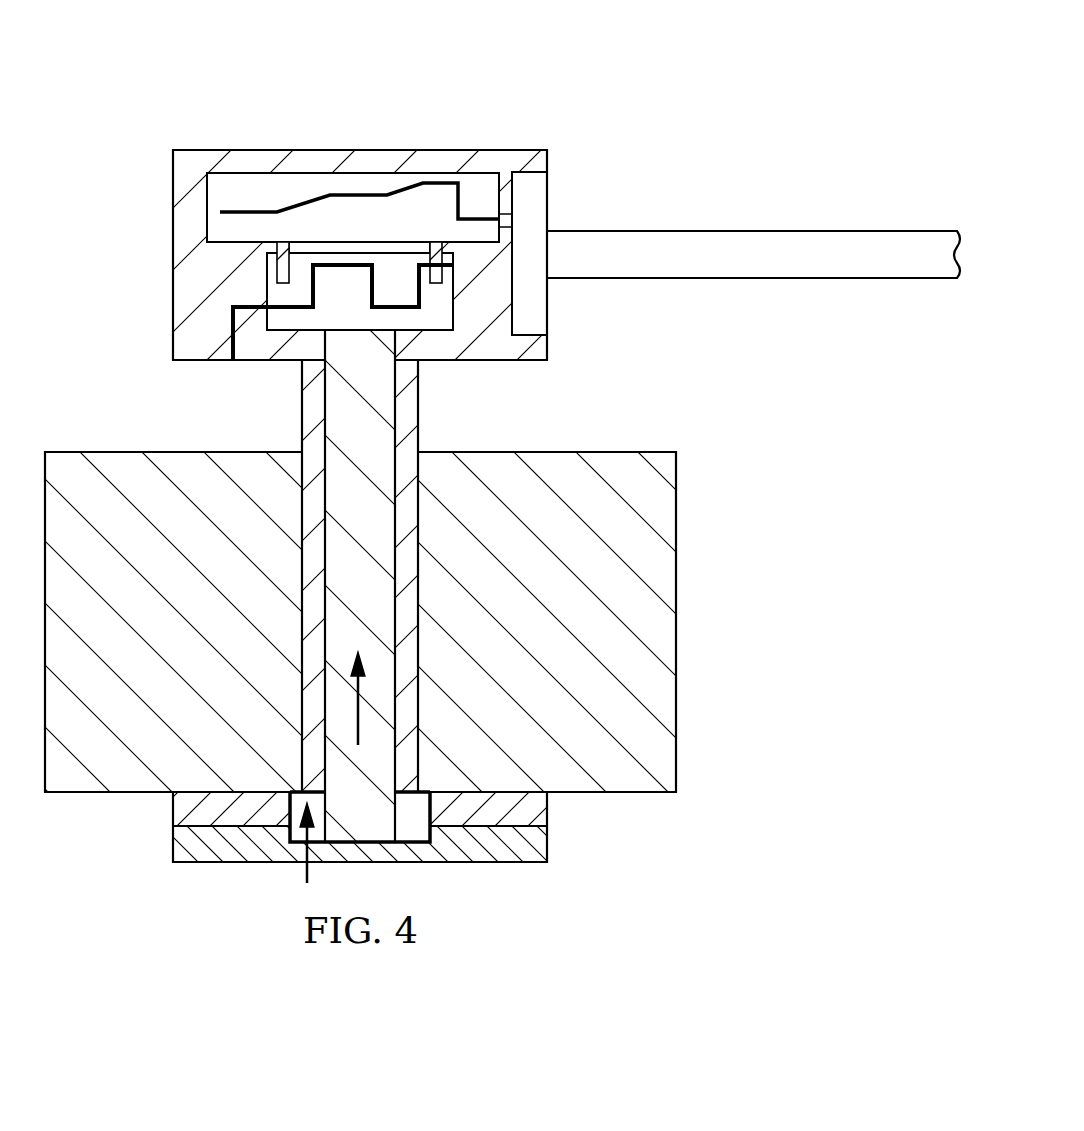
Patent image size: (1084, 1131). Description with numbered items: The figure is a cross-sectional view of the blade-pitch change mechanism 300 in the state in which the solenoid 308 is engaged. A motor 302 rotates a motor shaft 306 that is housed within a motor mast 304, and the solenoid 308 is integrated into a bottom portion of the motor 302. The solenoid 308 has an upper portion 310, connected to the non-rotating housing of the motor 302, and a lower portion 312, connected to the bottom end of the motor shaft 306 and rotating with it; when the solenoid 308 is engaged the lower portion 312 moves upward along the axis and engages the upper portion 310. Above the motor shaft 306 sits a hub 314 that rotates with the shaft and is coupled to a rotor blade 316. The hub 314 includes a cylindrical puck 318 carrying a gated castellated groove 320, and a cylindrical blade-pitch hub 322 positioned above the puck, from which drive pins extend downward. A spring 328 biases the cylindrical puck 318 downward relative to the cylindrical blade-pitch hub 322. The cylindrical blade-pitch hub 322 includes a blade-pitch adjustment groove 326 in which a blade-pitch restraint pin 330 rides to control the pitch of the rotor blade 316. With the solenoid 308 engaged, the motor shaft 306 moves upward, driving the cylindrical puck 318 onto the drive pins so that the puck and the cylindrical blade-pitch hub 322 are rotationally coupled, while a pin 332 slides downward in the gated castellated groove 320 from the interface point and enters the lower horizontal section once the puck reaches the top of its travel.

The blade-pitch change mechanism 300 is at (727, 67).
The motor 302 is at (667, 640).
The motor mast 304 is at (408, 415).
The motor shaft 306 is at (338, 400).
The solenoid 308 is at (580, 851).
The upper portion 310 is at (182, 807).
The lower portion 312 is at (182, 847).
The hub 314 is at (514, 140).
The rotor blade 316 is at (748, 231).
The cylindrical puck 318 is at (287, 296).
The gated castellated groove 320 is at (425, 295).
The cylindrical blade-pitch hub 322 is at (255, 170).
The blade-pitch adjustment groove 326 is at (358, 190).
The spring 328 is at (395, 245).
The blade-pitch restraint pin 330 is at (510, 197).
The pin 332 is at (232, 316).